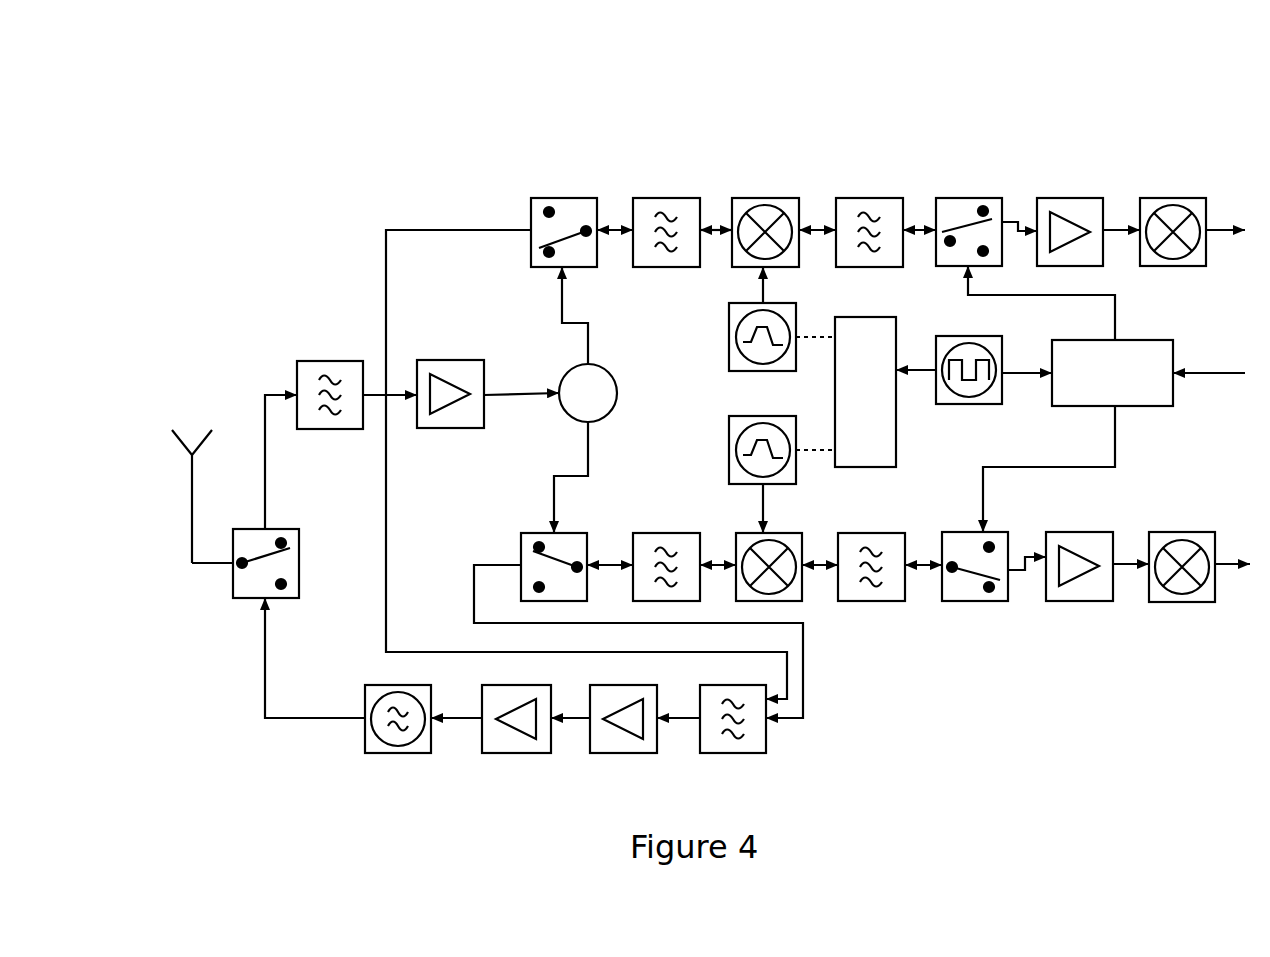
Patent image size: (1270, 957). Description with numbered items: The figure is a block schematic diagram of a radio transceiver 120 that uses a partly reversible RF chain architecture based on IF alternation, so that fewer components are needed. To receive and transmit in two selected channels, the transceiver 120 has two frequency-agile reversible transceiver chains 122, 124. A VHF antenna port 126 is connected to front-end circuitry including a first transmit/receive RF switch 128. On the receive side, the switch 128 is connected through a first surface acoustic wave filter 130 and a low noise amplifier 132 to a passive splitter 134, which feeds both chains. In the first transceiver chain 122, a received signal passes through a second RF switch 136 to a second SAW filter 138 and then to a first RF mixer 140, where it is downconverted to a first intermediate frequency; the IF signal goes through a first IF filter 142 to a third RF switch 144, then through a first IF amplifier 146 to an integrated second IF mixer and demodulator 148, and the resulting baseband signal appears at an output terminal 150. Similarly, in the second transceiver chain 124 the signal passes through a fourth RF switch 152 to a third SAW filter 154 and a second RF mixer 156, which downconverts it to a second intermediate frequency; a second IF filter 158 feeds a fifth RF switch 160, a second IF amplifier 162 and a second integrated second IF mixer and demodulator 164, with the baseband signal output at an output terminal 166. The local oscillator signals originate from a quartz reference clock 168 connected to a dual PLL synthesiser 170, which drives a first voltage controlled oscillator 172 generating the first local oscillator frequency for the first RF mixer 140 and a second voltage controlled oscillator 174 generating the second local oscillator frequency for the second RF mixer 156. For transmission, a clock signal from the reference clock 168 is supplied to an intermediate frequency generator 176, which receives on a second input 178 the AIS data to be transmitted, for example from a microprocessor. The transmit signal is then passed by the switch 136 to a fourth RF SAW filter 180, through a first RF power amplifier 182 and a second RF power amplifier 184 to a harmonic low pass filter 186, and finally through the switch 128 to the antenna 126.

The transceiver 120 is at (300, 232).
The first transceiver chain 122 is at (752, 170).
The second transceiver chain 124 is at (923, 622).
The VHF antenna port 126 is at (192, 480).
The first transmit/receive radio frequency switch 128 is at (287, 529).
The first surface acoustic wave filter 130 is at (337, 361).
The low noise amplifier 132 is at (472, 360).
The passive splitter 134 is at (568, 418).
The second transmit/receive radio frequency switch 136 is at (587, 198).
The second SAW filter 138 is at (688, 198).
The first RF mixer 140 is at (787, 198).
The first IF filter 142 is at (890, 198).
The third transmit/receive radio frequency switch 144 is at (977, 198).
The first IF amplifier 146 is at (1082, 198).
The integrated second IF mixer and demodulator 148 is at (1198, 198).
The output terminal 150 is at (1222, 236).
The fourth transmit/receive radio frequency switch 152 is at (538, 533).
The third SAW filter 154 is at (659, 533).
The second RF mixer 156 is at (787, 533).
The second IF filter 158 is at (862, 533).
The fifth transmit/receive radio frequency switch 160 is at (950, 532).
The second IF amplifier 162 is at (1064, 532).
The second integrated second IF mixer and demodulator 164 is at (1195, 532).
The output terminal 166 is at (1233, 570).
The quartz reference clock 168 is at (952, 336).
The dual PLL synthesiser 170 is at (835, 387).
The first voltage controlled oscillator 172 is at (729, 305).
The second voltage controlled oscillator 174 is at (729, 430).
The intermediate frequency generator 176 is at (1156, 340).
The second input 178 is at (1200, 376).
The fourth RF SAW filter 180 is at (748, 755).
The first RF power amplifier 182 is at (640, 755).
The second RF power amplifier 184 is at (530, 755).
The harmonic low pass filter 186 is at (417, 755).